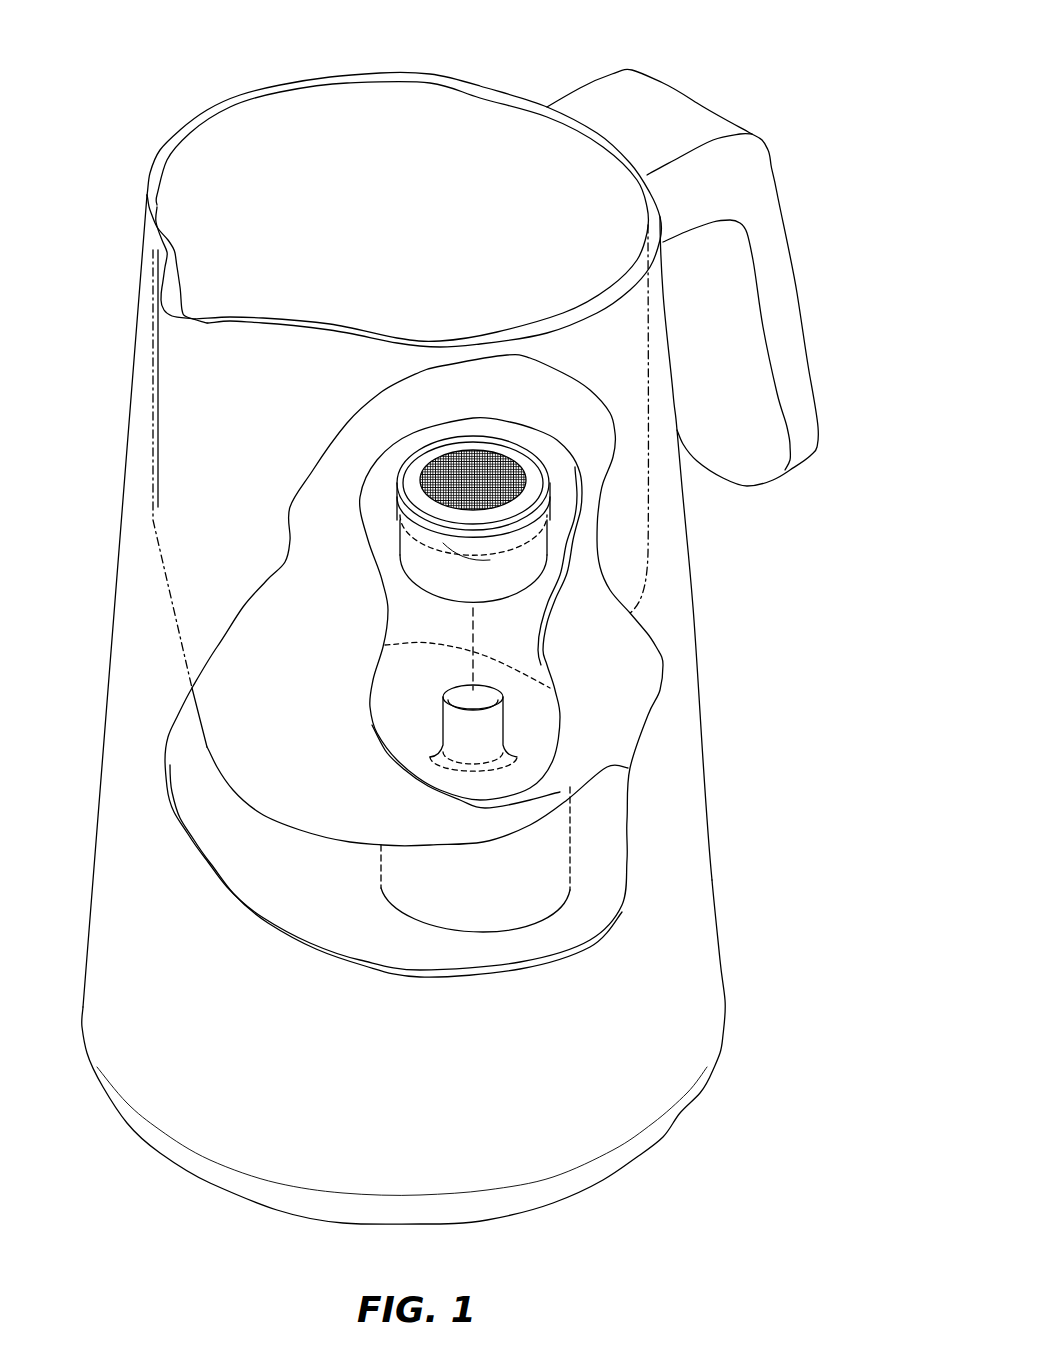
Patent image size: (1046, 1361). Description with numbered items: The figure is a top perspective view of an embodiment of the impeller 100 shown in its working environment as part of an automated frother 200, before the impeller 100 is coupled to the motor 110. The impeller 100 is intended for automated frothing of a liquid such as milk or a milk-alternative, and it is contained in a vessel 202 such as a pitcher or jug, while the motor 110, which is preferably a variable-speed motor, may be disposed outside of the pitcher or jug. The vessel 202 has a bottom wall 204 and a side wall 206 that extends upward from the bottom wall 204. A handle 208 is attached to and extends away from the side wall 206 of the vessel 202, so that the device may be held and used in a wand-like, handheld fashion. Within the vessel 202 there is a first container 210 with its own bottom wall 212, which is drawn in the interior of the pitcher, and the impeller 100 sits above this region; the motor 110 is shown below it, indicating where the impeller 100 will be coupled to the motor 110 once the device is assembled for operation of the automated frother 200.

The automated frother 200 is at (757, 90).
The vessel 202 is at (168, 143).
The bottom wall 204 is at (665, 1138).
The side wall 206 is at (419, 1047).
The handle 208 is at (797, 272).
The first container 210 is at (207, 747).
The bottom wall 212 is at (685, 852).
The impeller 100 is at (335, 506).
The motor 110 is at (498, 890).